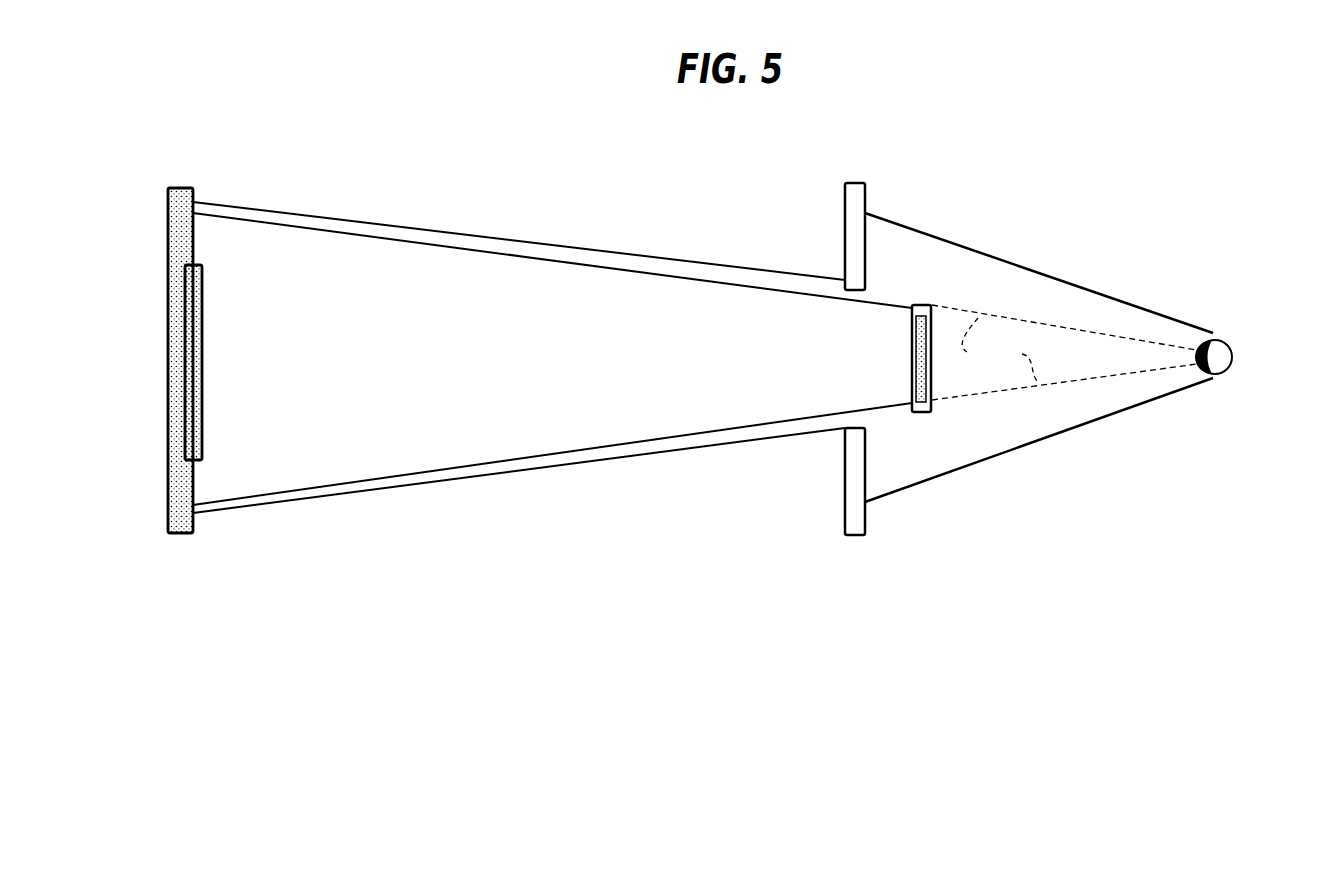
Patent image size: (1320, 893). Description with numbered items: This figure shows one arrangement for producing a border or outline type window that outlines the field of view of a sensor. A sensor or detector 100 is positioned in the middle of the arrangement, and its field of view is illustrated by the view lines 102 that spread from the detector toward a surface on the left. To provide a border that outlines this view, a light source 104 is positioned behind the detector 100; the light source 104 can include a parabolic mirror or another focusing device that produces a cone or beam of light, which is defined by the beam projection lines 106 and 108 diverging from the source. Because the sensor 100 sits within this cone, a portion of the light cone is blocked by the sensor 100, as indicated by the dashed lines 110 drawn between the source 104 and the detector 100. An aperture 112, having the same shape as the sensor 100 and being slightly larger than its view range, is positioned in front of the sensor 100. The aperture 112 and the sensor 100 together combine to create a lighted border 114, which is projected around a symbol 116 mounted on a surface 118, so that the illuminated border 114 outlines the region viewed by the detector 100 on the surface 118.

The sensor or detector 100 is at (912, 362).
The view lines 102 is at (600, 273).
The light source 104 is at (1231, 376).
The beam projection line 106 is at (1060, 278).
The beam projection line 108 is at (1042, 440).
The dashed lines 110 is at (1064, 352).
The aperture 112 is at (845, 207).
The lighted border 114 is at (196, 206).
The symbol 116 is at (203, 356).
The surface 118 is at (185, 534).